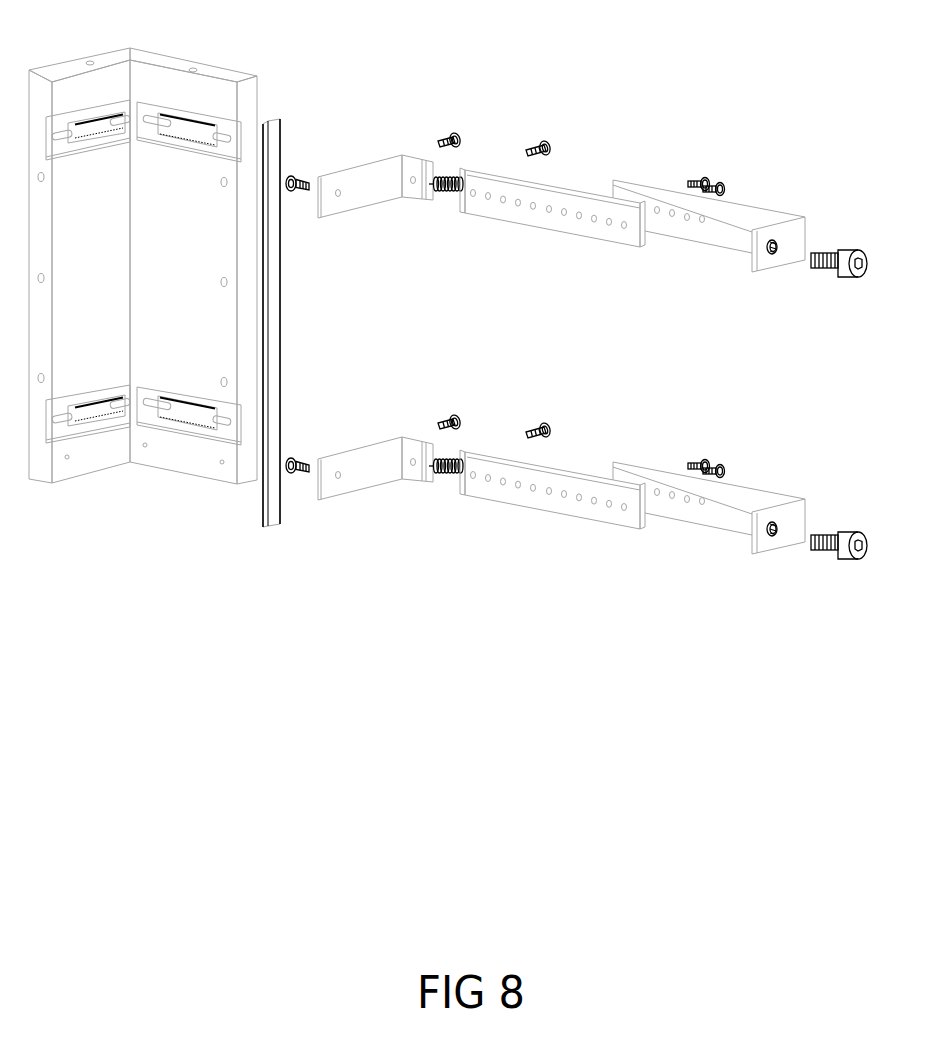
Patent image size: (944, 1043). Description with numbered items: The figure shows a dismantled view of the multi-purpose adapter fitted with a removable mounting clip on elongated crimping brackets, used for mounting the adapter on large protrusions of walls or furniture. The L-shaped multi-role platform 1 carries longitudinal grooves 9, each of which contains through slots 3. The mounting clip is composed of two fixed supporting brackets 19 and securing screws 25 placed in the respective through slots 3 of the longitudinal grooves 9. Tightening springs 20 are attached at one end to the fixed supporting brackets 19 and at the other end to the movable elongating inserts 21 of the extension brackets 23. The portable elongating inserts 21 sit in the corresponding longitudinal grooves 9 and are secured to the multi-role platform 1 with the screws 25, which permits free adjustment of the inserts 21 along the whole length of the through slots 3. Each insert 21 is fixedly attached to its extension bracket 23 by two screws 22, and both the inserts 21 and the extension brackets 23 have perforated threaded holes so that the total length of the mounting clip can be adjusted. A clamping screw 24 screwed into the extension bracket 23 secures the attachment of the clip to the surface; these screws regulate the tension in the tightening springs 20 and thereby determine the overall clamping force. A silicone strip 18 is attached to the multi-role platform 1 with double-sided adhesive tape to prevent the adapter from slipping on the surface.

The multi-role platform 1 is at (100, 463).
The through slots 3 is at (65, 130).
The longitudinal grooves 9 is at (127, 108).
The strip 18 is at (275, 142).
The fixed supporting brackets 19 is at (355, 183).
The tightening springs 20 is at (433, 357).
The elongating inserts 21 is at (552, 368).
The screws 22 is at (717, 186).
The extension brackets 23 is at (753, 220).
The clamping screw 24 is at (818, 250).
The securing screws 25 is at (300, 190).